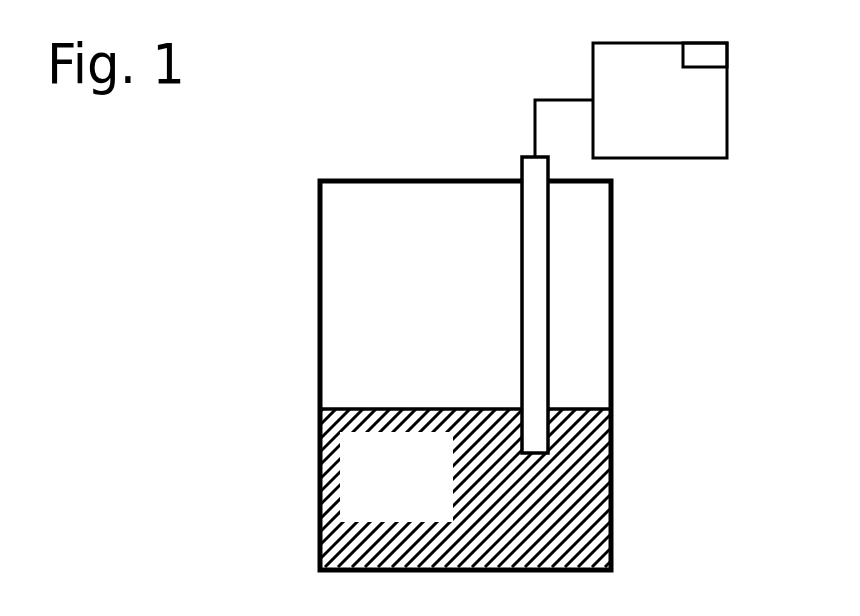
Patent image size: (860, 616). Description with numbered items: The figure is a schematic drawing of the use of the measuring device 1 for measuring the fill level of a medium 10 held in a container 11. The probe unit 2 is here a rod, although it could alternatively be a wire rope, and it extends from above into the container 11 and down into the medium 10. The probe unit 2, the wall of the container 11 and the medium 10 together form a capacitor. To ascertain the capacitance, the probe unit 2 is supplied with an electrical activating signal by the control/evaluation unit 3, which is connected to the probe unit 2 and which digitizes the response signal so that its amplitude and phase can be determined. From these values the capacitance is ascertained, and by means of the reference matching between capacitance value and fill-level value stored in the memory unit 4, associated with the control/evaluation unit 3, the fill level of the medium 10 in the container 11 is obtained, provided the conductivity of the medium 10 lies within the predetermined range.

The measuring device 1 is at (523, 113).
The probe unit 2 is at (522, 363).
The control/evaluation unit 3 is at (665, 142).
The memory unit 4 is at (718, 45).
The medium 10 is at (357, 505).
The container 11 is at (318, 363).